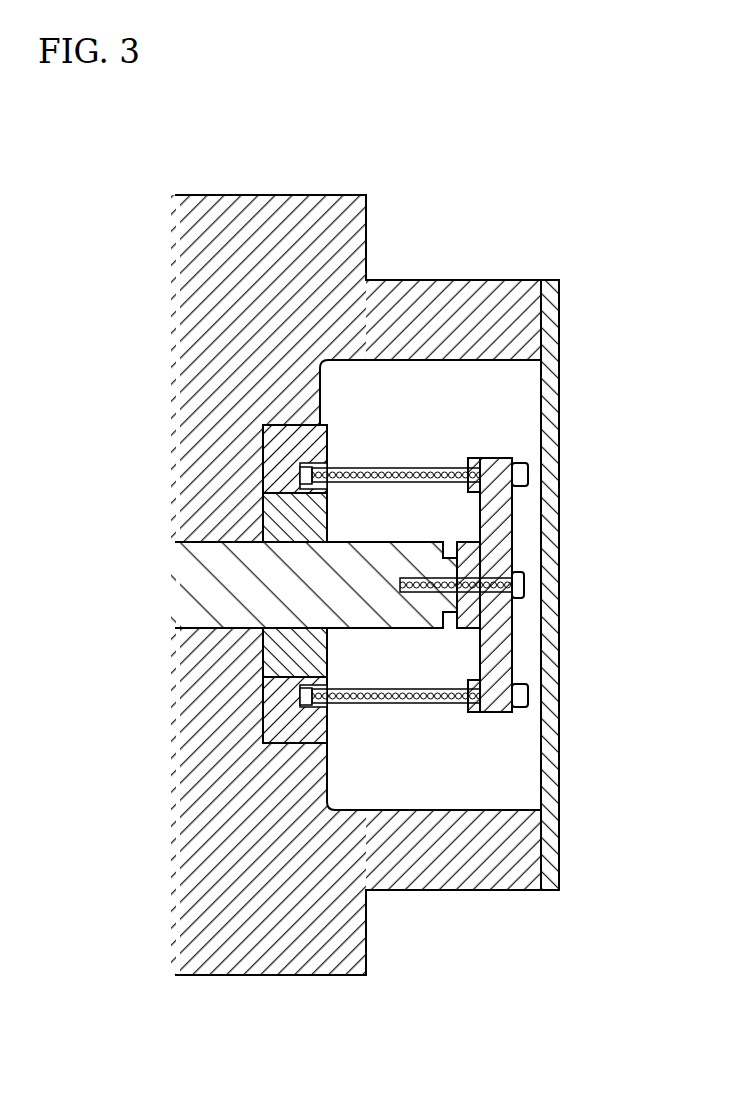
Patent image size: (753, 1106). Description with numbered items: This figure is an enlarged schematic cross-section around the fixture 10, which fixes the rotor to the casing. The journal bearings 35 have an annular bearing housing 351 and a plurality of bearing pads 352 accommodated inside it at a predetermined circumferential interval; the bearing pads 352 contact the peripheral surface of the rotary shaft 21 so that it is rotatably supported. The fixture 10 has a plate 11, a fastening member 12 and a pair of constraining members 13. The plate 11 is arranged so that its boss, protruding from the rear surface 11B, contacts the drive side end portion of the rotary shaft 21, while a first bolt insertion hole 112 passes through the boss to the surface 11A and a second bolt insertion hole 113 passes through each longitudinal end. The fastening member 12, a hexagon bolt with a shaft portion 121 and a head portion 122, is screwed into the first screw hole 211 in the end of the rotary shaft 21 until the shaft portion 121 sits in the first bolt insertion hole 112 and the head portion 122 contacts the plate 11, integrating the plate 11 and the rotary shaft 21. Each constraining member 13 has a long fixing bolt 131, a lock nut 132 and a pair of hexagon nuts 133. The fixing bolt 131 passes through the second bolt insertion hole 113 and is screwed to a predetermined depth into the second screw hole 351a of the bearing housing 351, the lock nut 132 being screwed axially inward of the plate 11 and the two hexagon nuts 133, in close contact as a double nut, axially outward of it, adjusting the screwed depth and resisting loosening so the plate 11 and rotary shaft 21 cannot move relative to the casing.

The fixture 10 is at (502, 410).
The plate 11 is at (517, 640).
The surface 11A is at (513, 540).
The rear surface 11B is at (447, 468).
The first bolt insertion hole 112 is at (513, 620).
The second bolt insertion hole 113 is at (516, 710).
The fastening member 12 is at (530, 586).
The shaft portion 121 is at (424, 606).
The head portion 122 is at (527, 577).
The constraining members 13 is at (468, 594).
The fixing bolt 131 is at (434, 457).
The lock nut 132 is at (465, 455).
The hexagon nuts 133 is at (534, 463).
The rotary shaft 21 is at (358, 636).
The first screw hole 211 is at (408, 594).
The journal bearings 35 is at (284, 418).
The bearing housing 351 is at (263, 432).
The second screw hole 351a is at (314, 486).
The bearing pads 352 is at (263, 515).